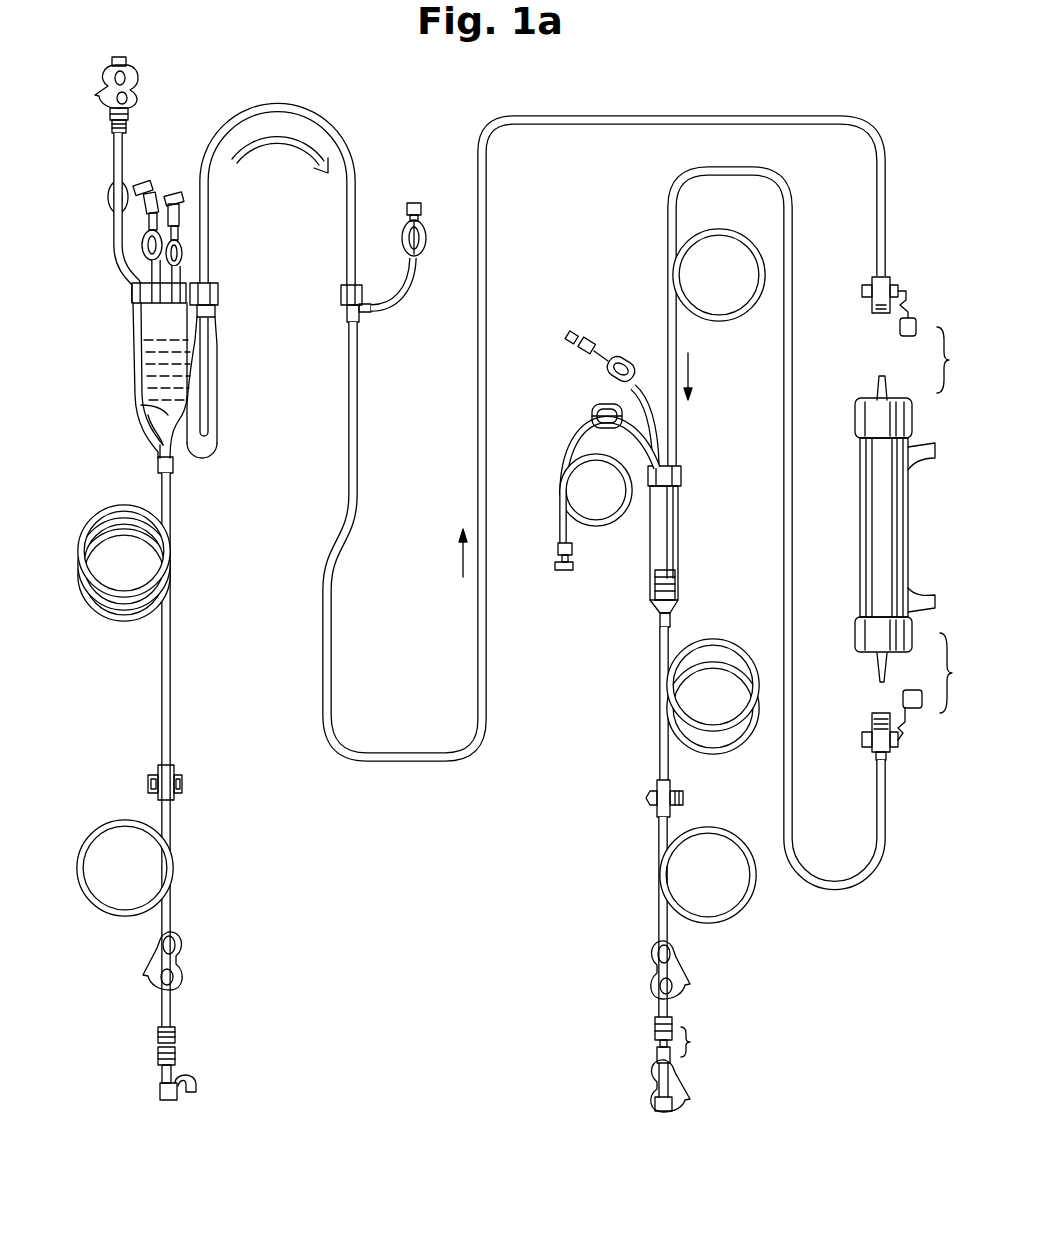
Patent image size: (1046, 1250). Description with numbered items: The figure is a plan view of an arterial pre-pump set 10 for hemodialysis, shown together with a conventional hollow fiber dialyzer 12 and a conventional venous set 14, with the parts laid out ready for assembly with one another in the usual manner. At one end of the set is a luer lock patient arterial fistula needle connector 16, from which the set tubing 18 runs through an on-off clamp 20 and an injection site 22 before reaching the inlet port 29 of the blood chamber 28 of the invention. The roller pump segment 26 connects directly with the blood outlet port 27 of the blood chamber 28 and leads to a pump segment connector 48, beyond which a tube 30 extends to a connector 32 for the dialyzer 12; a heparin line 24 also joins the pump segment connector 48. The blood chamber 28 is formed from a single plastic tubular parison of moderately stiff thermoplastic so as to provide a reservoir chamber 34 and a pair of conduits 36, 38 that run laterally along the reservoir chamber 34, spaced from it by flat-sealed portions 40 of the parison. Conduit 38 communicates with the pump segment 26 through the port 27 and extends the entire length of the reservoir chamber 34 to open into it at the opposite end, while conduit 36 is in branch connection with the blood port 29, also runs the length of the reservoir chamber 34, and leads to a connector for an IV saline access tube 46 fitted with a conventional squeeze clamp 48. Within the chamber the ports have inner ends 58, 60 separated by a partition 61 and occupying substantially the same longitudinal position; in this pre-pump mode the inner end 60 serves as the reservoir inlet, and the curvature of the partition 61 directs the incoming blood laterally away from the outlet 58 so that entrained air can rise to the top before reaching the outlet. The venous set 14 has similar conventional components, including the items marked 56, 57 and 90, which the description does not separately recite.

The arterial pre-pump set 10 is at (312, 598).
The hollow fiber dialyzer 12 is at (918, 521).
The venous set 14 is at (776, 537).
The luer lock patient arterial fistula needle connector 16 is at (165, 1073).
The set tubing 18 is at (161, 697).
The on-off clamp 20 is at (186, 960).
The injection site 22 is at (178, 775).
The heparin line 24 is at (398, 306).
The roller pump segment 26 is at (311, 115).
The blood outlet port 27 is at (218, 296).
The blood chamber 28 is at (215, 425).
The inlet port 29 is at (158, 465).
The tube 30 is at (477, 463).
The connector 32 is at (893, 289).
The reservoir chamber 34 is at (157, 372).
The conduit 36 is at (133, 323).
The conduit 38 is at (212, 350).
The flat-sealed portions 40 is at (197, 405).
The IV saline access tube 46 is at (124, 155).
The pump segment connector 48 is at (332, 286).
The tube with cap 56 is at (185, 215).
The tube with cap 57 is at (160, 188).
The inner end of outlet 58 is at (183, 433).
The inner end of inlet 60 is at (157, 423).
The partition 61 is at (160, 405).
The clamp assembly 90 is at (684, 1071).